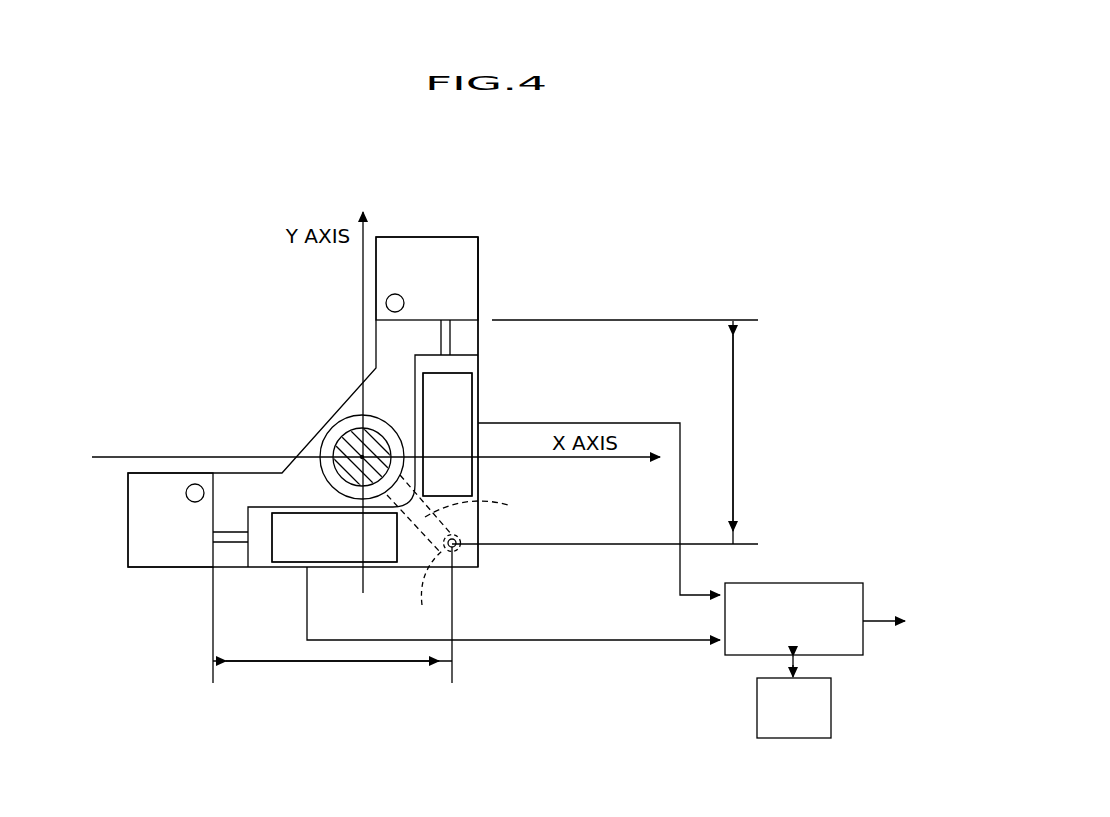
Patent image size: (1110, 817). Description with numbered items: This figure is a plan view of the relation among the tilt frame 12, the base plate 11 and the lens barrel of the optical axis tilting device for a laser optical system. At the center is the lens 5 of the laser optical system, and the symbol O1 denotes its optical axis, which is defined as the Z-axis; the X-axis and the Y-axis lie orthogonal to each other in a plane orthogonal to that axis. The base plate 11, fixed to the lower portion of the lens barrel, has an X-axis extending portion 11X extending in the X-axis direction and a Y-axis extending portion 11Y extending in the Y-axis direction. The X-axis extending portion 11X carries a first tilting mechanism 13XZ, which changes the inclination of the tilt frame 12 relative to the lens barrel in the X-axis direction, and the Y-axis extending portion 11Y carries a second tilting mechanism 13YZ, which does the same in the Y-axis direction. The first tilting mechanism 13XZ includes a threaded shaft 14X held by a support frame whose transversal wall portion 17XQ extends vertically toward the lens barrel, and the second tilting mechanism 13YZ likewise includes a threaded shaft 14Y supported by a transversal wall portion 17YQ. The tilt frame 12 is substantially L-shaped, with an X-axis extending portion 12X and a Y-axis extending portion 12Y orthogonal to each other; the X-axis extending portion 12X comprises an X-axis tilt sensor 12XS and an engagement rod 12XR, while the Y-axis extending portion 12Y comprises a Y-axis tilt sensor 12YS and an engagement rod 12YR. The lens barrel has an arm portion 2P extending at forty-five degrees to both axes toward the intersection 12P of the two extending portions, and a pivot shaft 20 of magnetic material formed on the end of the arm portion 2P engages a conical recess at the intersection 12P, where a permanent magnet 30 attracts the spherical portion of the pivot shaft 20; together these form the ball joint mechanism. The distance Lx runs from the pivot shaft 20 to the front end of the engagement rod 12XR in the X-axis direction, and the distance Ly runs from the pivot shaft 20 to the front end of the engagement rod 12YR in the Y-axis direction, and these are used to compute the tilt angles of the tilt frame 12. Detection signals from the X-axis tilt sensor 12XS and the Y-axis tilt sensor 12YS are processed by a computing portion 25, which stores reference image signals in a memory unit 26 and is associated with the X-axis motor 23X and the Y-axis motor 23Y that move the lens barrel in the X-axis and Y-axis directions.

The lens 5 is at (342, 418).
The optical axis O1 is at (348, 450).
The base plate 11 is at (233, 556).
The X-axis extending portion 11X is at (258, 488).
The Y-axis extending portion 11Y is at (470, 338).
The tilt frame 12 is at (420, 546).
The X-axis extending portion 12X is at (260, 560).
The X-axis tilt sensor 12XS is at (333, 553).
The engagement rod 12XR is at (233, 533).
The Y-axis extending portion 12Y is at (467, 365).
The Y-axis tilt sensor 12YS is at (470, 473).
The engagement rod 12YR is at (455, 333).
The intersection 12P is at (467, 527).
The arm portion 2P is at (480, 504).
The first tilting mechanism 13XZ is at (115, 527).
The second tilting mechanism 13YZ is at (488, 408).
The threaded shaft 14X is at (190, 485).
The threaded shaft 14Y is at (386, 304).
The transversal wall portion 17XQ is at (160, 547).
The transversal wall portion 17YQ is at (440, 253).
The pivot shaft 20 is at (461, 548).
The permanent magnet 30 is at (423, 593).
The computing portion 25 is at (808, 605).
The memory unit 26 is at (820, 708).
The X-axis motor 23X is at (911, 607).
The Y-axis motor 23Y is at (911, 607).
The distance Lx is at (332, 628).
The distance Ly is at (735, 425).